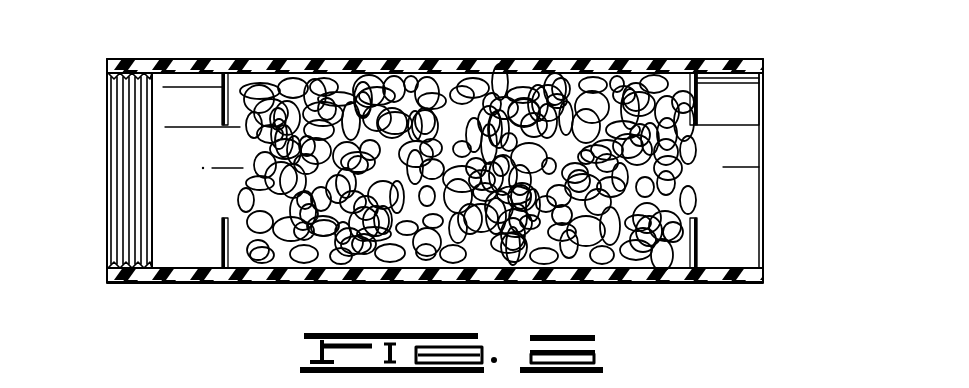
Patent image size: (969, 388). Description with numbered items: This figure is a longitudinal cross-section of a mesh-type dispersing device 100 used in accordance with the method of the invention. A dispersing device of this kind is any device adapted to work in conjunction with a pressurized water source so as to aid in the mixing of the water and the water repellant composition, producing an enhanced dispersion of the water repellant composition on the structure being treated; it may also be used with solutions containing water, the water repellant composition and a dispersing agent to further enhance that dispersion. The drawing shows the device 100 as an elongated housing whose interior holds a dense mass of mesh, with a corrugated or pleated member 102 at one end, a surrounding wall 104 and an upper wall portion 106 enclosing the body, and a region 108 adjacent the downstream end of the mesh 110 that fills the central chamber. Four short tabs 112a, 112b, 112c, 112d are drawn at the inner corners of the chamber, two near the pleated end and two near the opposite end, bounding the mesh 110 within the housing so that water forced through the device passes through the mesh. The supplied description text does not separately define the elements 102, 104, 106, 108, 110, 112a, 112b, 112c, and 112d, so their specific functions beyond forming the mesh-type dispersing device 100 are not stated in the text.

The mesh-type dispersing device 100 is at (774, 110).
The pleated filter element 102 is at (107, 125).
The housing 104 is at (765, 193).
The housing wall 106 is at (531, 61).
The fibrous filter pack 108 is at (660, 80).
The fibrous filter media 110 is at (400, 76).
The retaining tab 112a is at (222, 110).
The retaining tab 112b is at (222, 232).
The retaining tab 112c is at (700, 101).
The retaining tab 112d is at (698, 242).